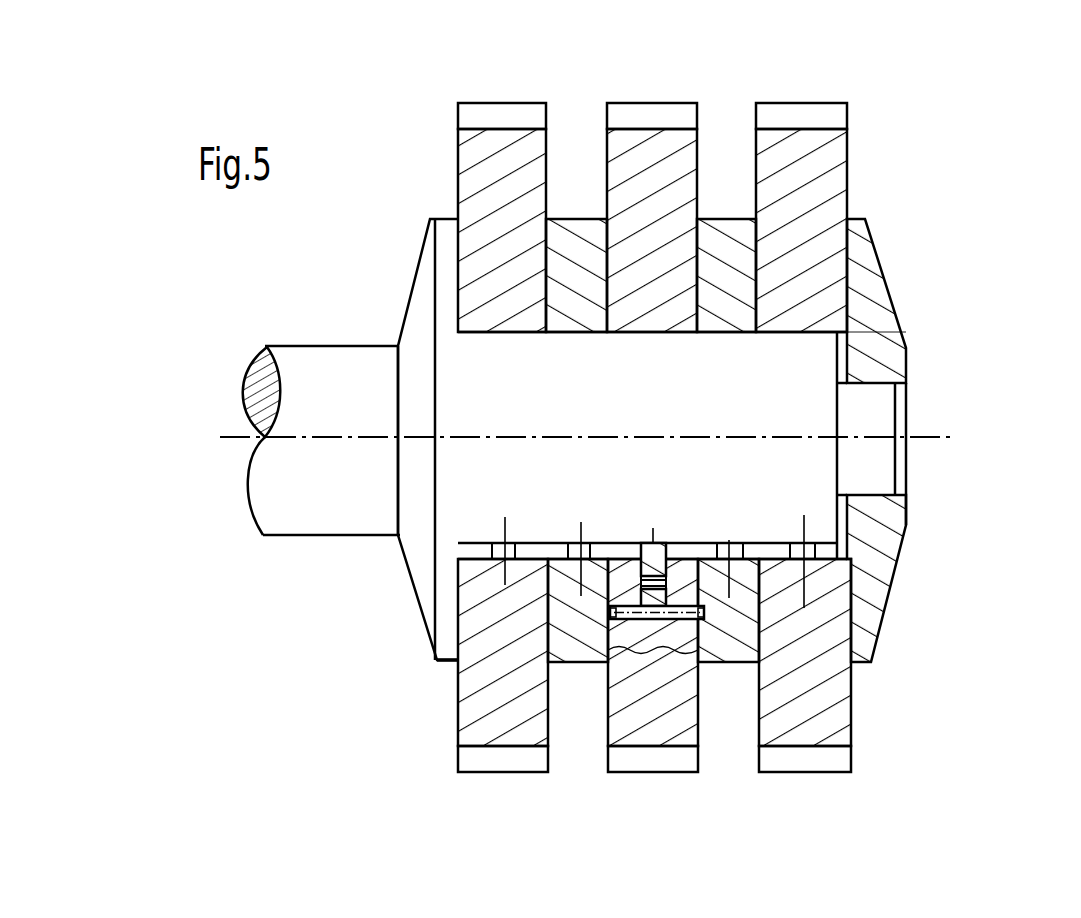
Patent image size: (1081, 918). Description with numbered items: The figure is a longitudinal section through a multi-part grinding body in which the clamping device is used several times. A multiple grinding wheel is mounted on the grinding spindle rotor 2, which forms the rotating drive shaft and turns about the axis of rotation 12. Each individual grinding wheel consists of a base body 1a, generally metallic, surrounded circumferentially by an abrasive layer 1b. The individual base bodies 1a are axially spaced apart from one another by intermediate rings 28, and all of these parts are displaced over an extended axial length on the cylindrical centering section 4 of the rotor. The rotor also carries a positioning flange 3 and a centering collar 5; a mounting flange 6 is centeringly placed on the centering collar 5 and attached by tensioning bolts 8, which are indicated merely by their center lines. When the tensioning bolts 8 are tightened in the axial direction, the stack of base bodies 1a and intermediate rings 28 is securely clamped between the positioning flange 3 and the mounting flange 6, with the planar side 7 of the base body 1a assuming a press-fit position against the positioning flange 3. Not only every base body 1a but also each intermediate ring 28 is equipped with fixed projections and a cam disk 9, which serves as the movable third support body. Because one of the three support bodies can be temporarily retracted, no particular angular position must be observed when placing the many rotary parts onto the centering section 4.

The base body 1a is at (522, 153).
The abrasive layer 1b is at (505, 110).
The grinding spindle rotor 2 is at (325, 398).
The positioning flange 3 is at (430, 580).
The cylindrical centering section 4 is at (815, 358).
The centering collar 5 is at (880, 415).
The mounting flange 6 is at (862, 260).
The planar side 7 is at (437, 673).
The tensioning bolts 8 is at (820, 517).
The cam disk 9 is at (508, 550).
The axis of rotation 12 is at (230, 437).
The intermediate rings 28 is at (584, 640).